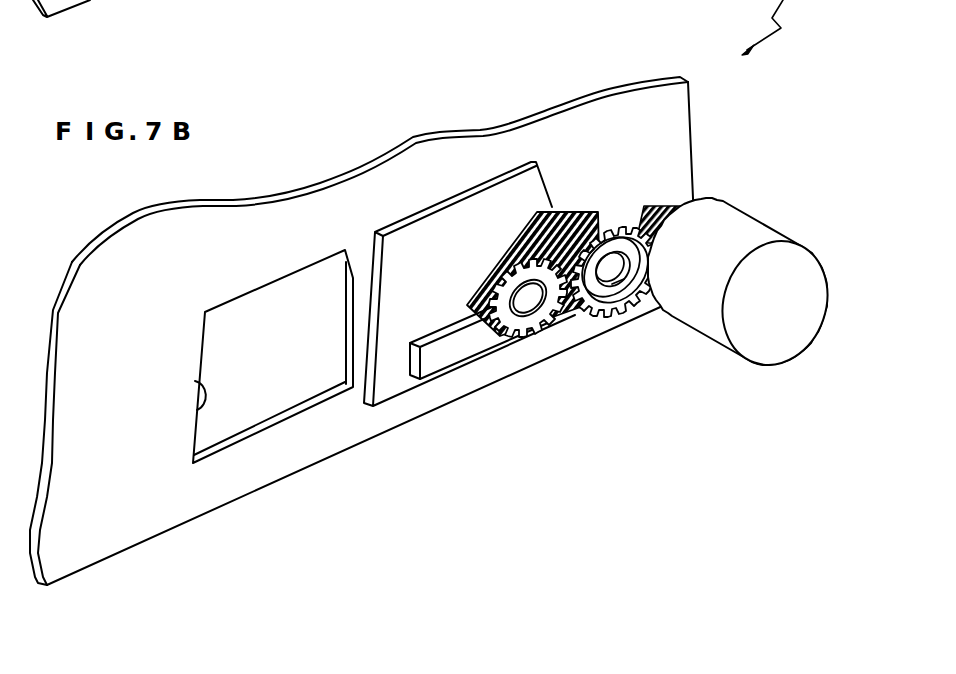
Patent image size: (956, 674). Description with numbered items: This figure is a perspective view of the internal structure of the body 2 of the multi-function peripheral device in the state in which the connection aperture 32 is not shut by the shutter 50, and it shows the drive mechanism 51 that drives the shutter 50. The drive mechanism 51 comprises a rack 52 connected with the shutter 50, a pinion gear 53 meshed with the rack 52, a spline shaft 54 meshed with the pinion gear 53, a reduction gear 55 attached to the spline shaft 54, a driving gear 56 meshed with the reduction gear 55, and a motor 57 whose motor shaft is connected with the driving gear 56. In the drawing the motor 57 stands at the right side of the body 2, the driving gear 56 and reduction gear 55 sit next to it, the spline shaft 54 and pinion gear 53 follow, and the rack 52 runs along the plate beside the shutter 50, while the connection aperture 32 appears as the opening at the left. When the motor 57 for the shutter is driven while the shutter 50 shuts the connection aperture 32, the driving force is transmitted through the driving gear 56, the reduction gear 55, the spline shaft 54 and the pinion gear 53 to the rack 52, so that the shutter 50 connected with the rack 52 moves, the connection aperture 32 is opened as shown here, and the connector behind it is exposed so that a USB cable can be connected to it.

The body 2 is at (678, 118).
The connection aperture 32 is at (197, 410).
The shutter 50 is at (463, 222).
The drive mechanism 51 is at (650, 395).
The rack 52 is at (455, 353).
The pinion gear 53 is at (533, 335).
The spline shaft 54 is at (559, 212).
The reduction gear 55 is at (620, 327).
The driving gear 56 is at (658, 210).
The motor 57 is at (775, 345).